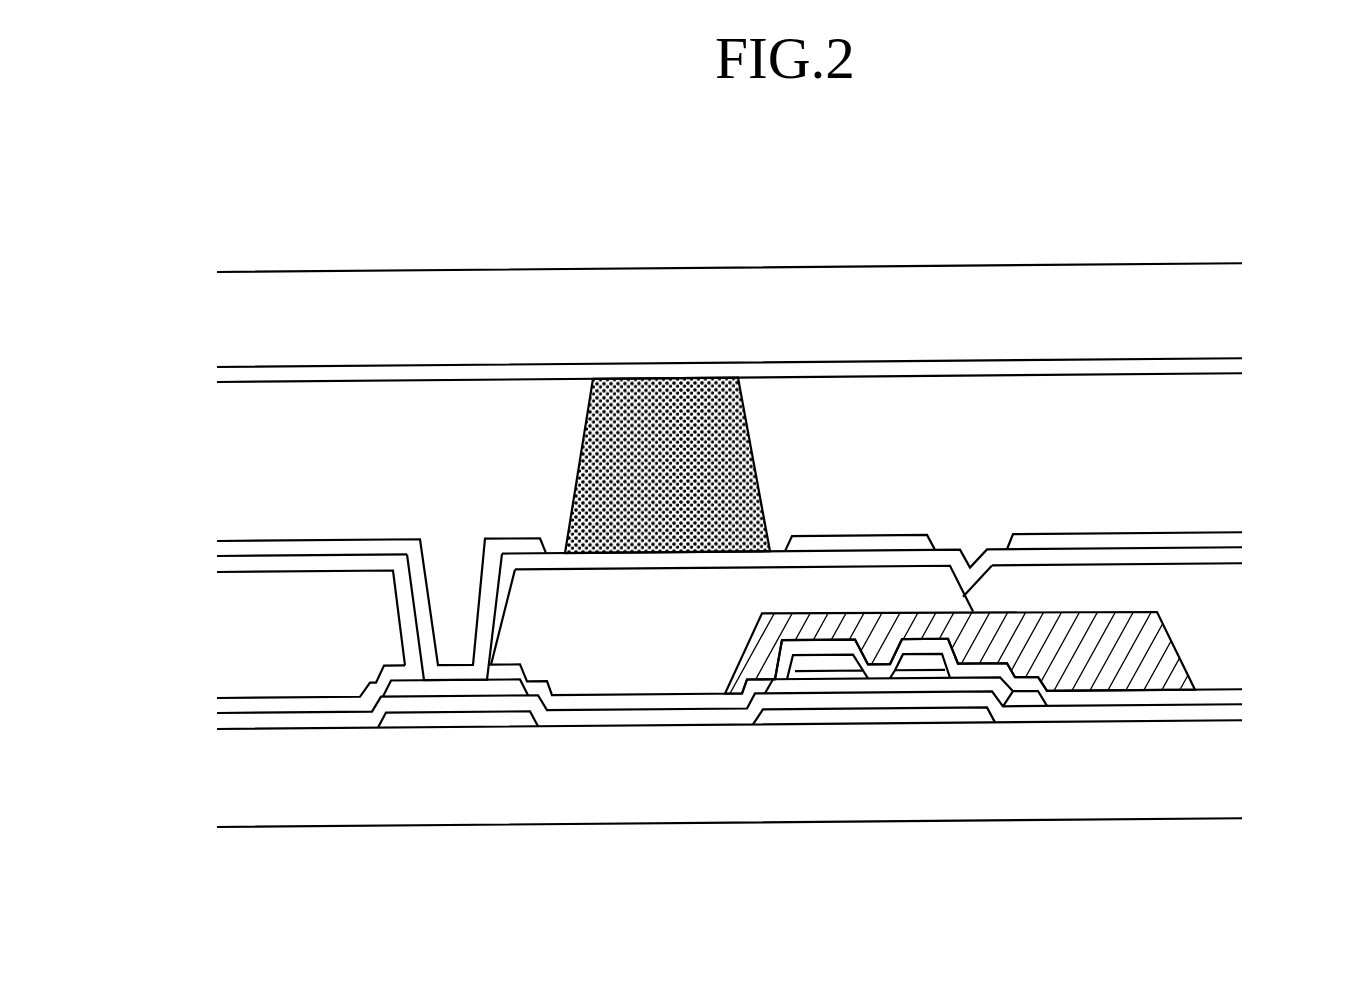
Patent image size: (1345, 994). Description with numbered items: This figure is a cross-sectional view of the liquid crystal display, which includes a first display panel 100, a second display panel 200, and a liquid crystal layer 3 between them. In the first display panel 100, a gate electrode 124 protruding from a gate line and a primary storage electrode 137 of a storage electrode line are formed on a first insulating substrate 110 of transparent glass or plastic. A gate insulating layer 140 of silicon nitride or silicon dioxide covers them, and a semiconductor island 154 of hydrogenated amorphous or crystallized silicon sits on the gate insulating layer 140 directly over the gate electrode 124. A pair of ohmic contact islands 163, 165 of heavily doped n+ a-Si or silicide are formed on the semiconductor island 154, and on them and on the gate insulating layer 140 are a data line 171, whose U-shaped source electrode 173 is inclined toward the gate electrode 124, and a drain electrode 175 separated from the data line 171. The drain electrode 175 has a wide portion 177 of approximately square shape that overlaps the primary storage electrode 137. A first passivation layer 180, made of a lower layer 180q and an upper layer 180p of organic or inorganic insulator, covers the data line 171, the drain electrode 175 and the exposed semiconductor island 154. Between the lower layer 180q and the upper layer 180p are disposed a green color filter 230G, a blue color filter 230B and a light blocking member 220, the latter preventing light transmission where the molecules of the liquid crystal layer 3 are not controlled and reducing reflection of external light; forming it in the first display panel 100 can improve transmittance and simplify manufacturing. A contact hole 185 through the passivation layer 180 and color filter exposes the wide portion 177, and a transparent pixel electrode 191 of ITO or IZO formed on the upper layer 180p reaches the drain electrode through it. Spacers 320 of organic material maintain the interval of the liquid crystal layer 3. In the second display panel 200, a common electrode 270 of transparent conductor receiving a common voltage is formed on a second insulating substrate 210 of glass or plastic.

The liquid crystal layer 3 is at (1250, 387).
The first display panel 100 is at (1250, 827).
The first insulating substrate 110 is at (295, 796).
The gate electrode 124 is at (848, 722).
The primary storage electrode 137 is at (417, 724).
The gate insulating layer 140 is at (603, 715).
The semiconductor island 154 is at (877, 691).
The ohmic contact island 163 is at (907, 678).
The ohmic contact island 165 is at (835, 677).
The data line 171 is at (1020, 710).
The source electrode 173 is at (925, 666).
The drain electrode 175 is at (817, 665).
The wide portion 177 is at (483, 692).
The first passivation layer 180 is at (729, 554).
The upper layer 180p is at (1118, 563).
The lower layer 180q is at (1222, 696).
The contact hole 185 is at (415, 599).
The pixel electrode 191 is at (362, 549).
The second display panel 200 is at (764, 286).
The second insulating substrate 210 is at (1015, 307).
The light blocking member 220 is at (1118, 683).
The green color filter 230G is at (272, 593).
The blue color filter 230B is at (1025, 597).
The common electrode 270 is at (905, 374).
The spacer 320 is at (662, 414).